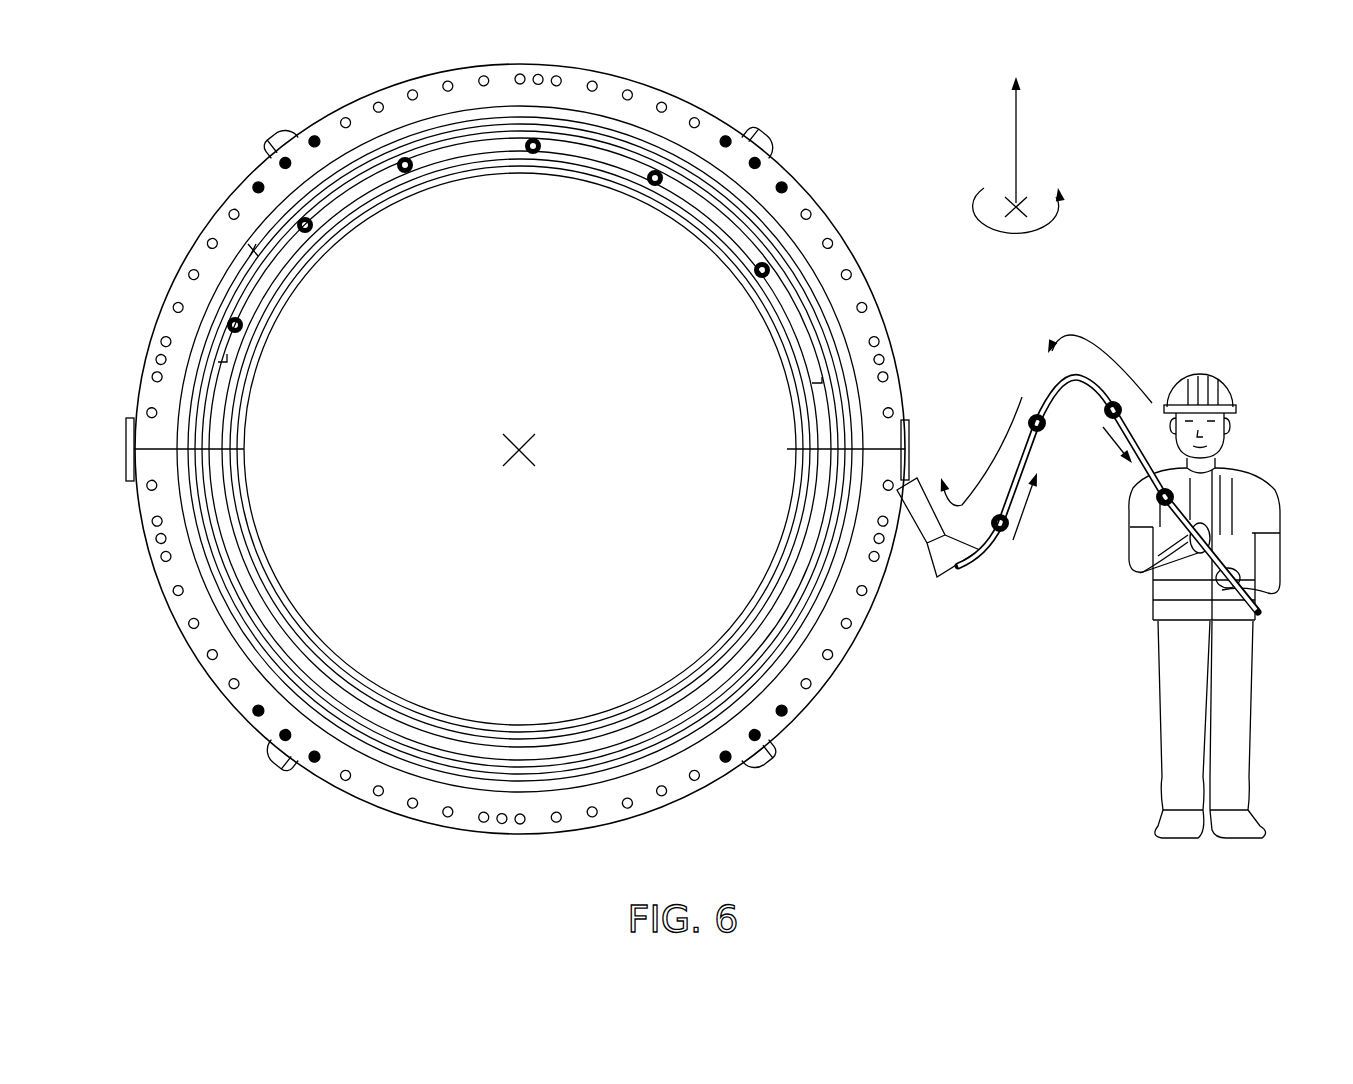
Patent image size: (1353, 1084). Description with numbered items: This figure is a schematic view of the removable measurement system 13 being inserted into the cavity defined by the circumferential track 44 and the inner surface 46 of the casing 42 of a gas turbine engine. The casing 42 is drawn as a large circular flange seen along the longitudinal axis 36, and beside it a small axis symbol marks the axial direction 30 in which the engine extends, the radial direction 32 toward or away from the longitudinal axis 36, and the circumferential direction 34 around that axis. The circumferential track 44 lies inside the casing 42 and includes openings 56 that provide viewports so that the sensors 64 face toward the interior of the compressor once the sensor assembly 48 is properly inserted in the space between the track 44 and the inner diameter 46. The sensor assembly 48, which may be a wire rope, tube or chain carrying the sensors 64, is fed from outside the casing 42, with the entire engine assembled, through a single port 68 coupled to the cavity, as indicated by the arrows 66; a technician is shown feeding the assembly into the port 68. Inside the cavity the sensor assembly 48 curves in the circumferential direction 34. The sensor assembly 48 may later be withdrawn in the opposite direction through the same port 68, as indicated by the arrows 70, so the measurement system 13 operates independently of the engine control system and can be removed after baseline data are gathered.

The measurement system 13 is at (1120, 472).
The axial direction 30 is at (1025, 196).
The radial direction 32 is at (1015, 137).
The circumferential direction 34 is at (1028, 233).
The longitudinal axis 36 is at (500, 447).
The casing 42 is at (812, 180).
The circumferential track 44 is at (253, 250).
The inner surface of the casing 46 is at (806, 432).
The sensor assembly 48 is at (1083, 385).
The openings 56 is at (533, 157).
The sensors 64 is at (1035, 415).
The arrows 66 is at (1003, 437).
The port 68 is at (918, 590).
The arrows 70 is at (1020, 518).